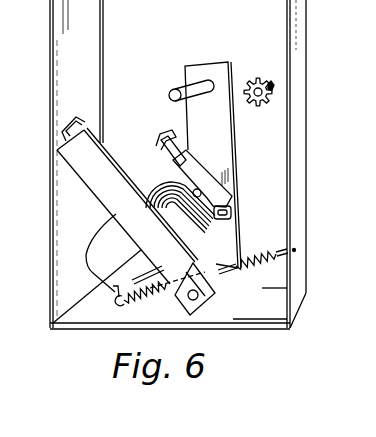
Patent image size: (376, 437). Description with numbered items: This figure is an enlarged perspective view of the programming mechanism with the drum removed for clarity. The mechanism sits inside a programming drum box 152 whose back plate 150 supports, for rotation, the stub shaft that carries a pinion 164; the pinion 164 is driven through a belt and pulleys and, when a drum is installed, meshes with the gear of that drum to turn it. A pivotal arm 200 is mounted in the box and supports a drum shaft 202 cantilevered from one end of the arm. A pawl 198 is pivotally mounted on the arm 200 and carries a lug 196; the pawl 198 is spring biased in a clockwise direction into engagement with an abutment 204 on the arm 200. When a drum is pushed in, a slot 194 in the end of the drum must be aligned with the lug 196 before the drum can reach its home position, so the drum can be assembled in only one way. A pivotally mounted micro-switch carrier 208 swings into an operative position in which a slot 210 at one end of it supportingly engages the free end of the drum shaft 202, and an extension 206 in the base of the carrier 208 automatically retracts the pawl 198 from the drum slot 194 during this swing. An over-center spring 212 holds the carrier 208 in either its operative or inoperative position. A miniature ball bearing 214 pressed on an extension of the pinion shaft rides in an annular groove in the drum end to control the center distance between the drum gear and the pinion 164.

The back plate 150 is at (199, 182).
The programming drum box 152 is at (298, 183).
The pinion 164 is at (258, 107).
The slot 194 is at (112, 272).
The lug 196 is at (166, 134).
The pawl 198 is at (190, 183).
The pivotal arm 200 is at (213, 71).
The drum shaft 202 is at (171, 92).
The abutment 204 is at (222, 214).
The extension 206 is at (188, 247).
The micro-switch carrier 208 is at (114, 208).
The slot 210 is at (64, 129).
The over-center spring 212 is at (251, 272).
The miniature ball bearing 214 is at (270, 84).